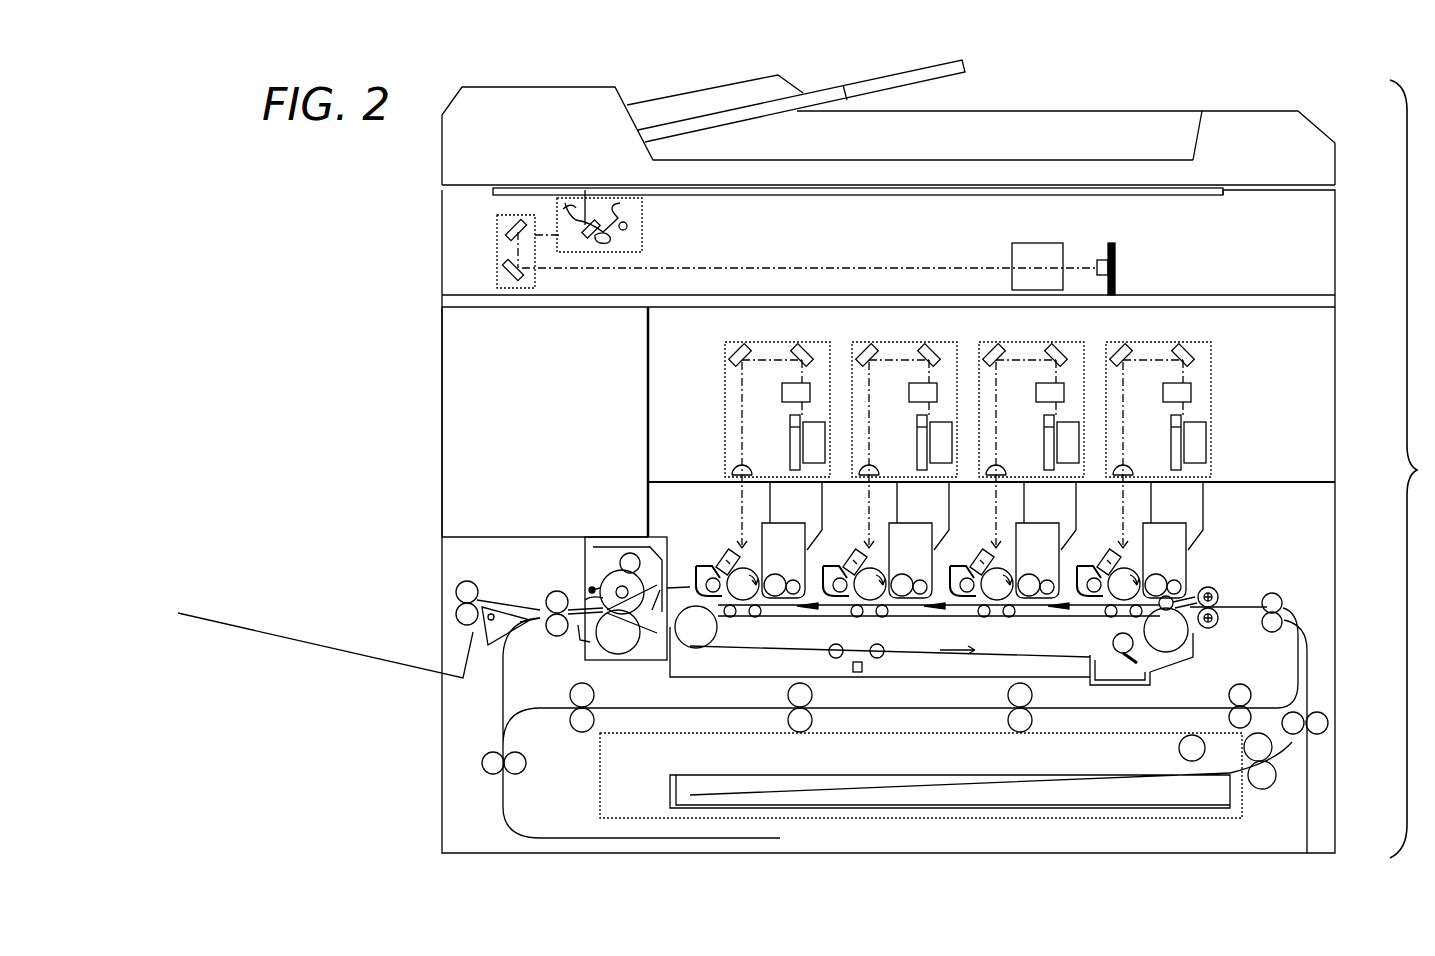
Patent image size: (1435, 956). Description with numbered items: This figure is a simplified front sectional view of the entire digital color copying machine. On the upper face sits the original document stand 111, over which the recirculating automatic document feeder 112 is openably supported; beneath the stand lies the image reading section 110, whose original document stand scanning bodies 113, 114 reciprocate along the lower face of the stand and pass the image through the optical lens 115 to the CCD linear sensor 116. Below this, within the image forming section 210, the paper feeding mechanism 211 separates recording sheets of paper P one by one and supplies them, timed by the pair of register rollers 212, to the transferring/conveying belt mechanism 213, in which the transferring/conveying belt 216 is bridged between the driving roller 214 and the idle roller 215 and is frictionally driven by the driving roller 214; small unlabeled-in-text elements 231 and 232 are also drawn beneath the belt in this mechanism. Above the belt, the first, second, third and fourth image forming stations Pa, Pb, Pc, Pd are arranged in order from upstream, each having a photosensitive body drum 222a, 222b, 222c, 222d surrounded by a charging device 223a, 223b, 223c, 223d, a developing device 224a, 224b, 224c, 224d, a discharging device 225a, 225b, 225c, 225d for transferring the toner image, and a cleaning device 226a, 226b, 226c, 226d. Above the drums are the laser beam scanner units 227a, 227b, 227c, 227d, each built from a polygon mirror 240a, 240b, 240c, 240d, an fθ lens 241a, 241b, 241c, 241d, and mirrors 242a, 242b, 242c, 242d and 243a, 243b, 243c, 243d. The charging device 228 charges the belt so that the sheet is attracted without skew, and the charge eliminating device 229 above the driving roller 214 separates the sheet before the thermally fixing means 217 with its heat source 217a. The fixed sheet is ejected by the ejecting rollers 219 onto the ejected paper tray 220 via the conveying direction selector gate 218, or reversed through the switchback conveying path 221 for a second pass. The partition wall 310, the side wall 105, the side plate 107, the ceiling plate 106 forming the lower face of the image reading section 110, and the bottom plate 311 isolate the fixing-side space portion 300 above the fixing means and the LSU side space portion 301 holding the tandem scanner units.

The side wall 105 is at (1335, 383).
The ceiling plate 106 is at (1260, 300).
The side plate 107 is at (442, 482).
The image reading section 110 is at (1264, 245).
The original document stand 111 is at (1035, 185).
The RADF (recirculating automatic document feeder) 112 is at (1269, 162).
The original document stand scanning body 113 is at (533, 225).
The original document stand scanning body 114 is at (497, 260).
The optical lens 115 is at (1040, 243).
The CCD linear sensor 116 is at (1115, 265).
The image forming section 210 is at (1277, 513).
The paper feeding mechanism 211 is at (1299, 779).
The pair of register rollers 212 is at (1220, 590).
The transferring/conveying belt mechanism 213 is at (980, 670).
The driving roller 214 is at (670, 675).
The idle roller 215 is at (1175, 640).
The transferring/conveying belt 216 is at (1080, 680).
The thermally fixing means 217 is at (630, 540).
The heat source 217a is at (622, 586).
The conveying direction selector gate 218 is at (562, 548).
The ejecting rollers 219 is at (457, 592).
The ejected paper tray 220 is at (258, 614).
The switchback conveying path 221 is at (505, 790).
The photosensitive body drum 222a is at (1143, 566).
The photosensitive body drum 222b is at (1016, 566).
The photosensitive body drum 222c is at (889, 566).
The photosensitive body drum 222d is at (762, 566).
The charging device 223a is at (1101, 552).
The charging device 223b is at (974, 552).
The charging device 223c is at (847, 552).
The charging device 223d is at (720, 552).
The developing device 224a is at (1173, 523).
The developing device 224b is at (1046, 523).
The developing device 224c is at (919, 523).
The developing device 224d is at (792, 523).
The discharging device 225a is at (1112, 618).
The discharging device 225b is at (999, 618).
The discharging device 225c is at (872, 618).
The discharging device 225d is at (745, 618).
The cleaning device 226a is at (1075, 587).
The cleaning device 226b is at (950, 587).
The cleaning device 226c is at (823, 587).
The cleaning device 226d is at (708, 568).
The laser beam scanner unit (LSU) 227a is at (1186, 342).
The laser beam scanner unit (LSU) 227b is at (1059, 342).
The laser beam scanner unit (LSU) 227c is at (932, 342).
The laser beam scanner unit (LSU) 227d is at (805, 342).
The charging device for attracting a recording sheet 228 is at (1185, 593).
The charge eliminating device 229 is at (672, 552).
The sensor rollers 231 is at (832, 656).
The sensor 232 is at (862, 668).
The polygon mirror 240a is at (1170, 437).
The polygon mirror 240b is at (1043, 437).
The polygon mirror 240c is at (916, 437).
The polygon mirror 240d is at (789, 437).
The fθ lens 241a is at (1161, 393).
The fθ lens 241b is at (1034, 393).
The fθ lens 241c is at (907, 393).
The fθ lens 241d is at (780, 393).
The mirror 242a is at (1199, 363).
The mirror 242b is at (1072, 363).
The mirror 242c is at (945, 363).
The mirror 242d is at (818, 363).
The mirror 243a is at (1139, 363).
The mirror 243b is at (1012, 363).
The mirror 243c is at (885, 363).
The mirror 243d is at (758, 363).
The fixing-side space portion 300 is at (558, 369).
The LSU side space portion 301 is at (708, 335).
The partition wall 310 is at (648, 402).
The bottom plate 311 is at (677, 482).
The recording sheet of paper P is at (950, 779).
The first image forming station Pa is at (1116, 530).
The second image forming station Pb is at (989, 530).
The third image forming station Pc is at (862, 530).
The fourth image forming station Pd is at (735, 530).